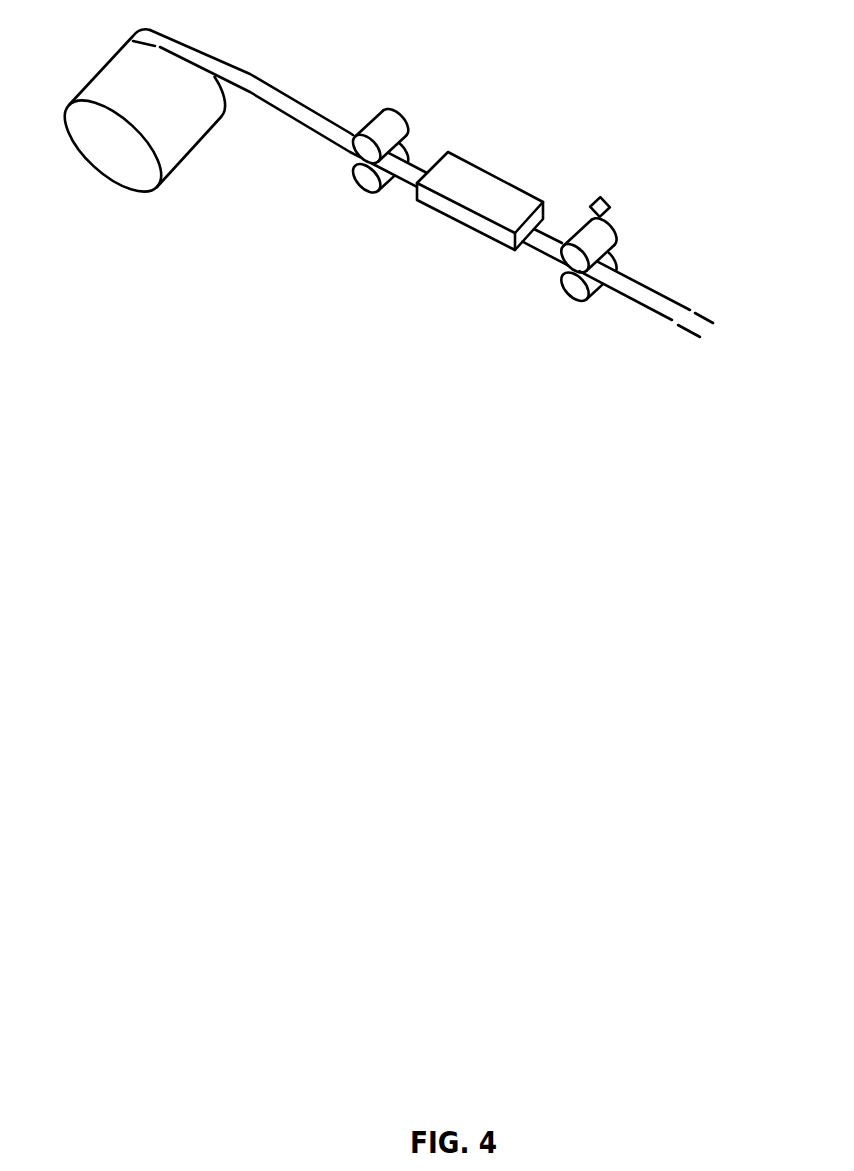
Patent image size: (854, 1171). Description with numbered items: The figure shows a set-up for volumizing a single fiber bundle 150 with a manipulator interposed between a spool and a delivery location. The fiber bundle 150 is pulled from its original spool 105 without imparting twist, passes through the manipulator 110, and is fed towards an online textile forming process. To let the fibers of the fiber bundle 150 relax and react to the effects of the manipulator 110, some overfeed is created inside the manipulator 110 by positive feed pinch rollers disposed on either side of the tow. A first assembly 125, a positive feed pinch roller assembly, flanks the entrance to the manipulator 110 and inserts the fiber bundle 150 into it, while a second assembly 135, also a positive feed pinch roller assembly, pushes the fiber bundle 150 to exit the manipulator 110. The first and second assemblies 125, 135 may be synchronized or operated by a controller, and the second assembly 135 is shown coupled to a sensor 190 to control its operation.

The spool 105 is at (108, 146).
The manipulator 110 is at (483, 200).
The first assembly 125 is at (380, 134).
The second assembly 135 is at (594, 238).
The fiber bundle 150 is at (249, 83).
The sensor 190 is at (595, 203).